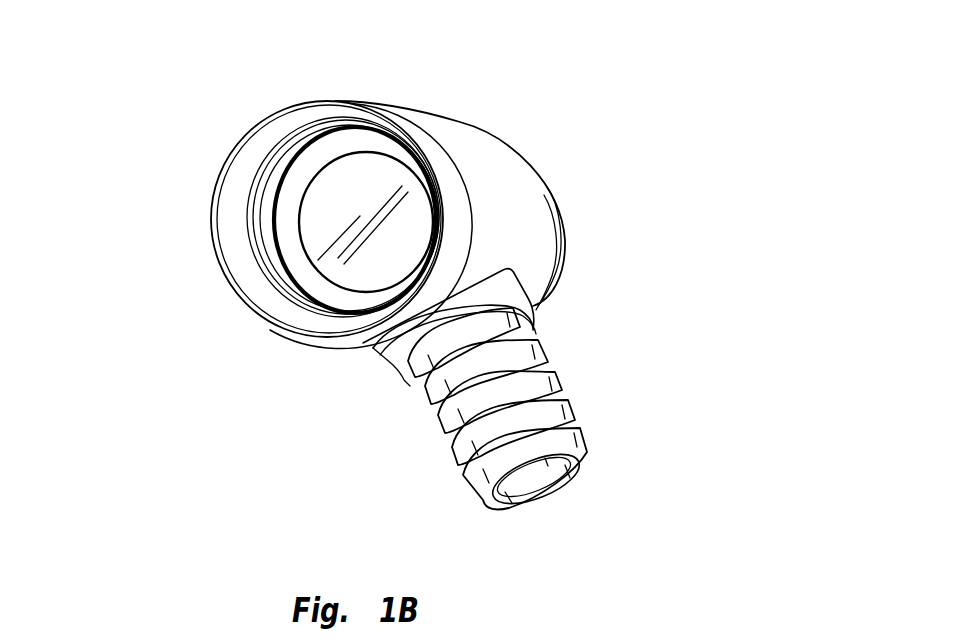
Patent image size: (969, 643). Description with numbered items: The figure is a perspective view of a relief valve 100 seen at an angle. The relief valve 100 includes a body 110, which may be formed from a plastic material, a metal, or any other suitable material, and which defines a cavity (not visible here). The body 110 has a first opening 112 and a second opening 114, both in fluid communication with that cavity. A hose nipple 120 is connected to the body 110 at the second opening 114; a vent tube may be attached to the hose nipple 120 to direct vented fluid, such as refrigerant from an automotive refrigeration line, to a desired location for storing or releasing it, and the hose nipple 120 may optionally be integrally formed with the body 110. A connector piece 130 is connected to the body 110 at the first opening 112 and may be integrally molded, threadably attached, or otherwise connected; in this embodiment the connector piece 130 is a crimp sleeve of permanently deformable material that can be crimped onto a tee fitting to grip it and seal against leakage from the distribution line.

The relief valve 100 is at (616, 156).
The body 110 is at (477, 133).
The first opening 112 is at (327, 151).
The second opening 114 is at (405, 378).
The hose nipple 120 is at (566, 370).
The connector piece 130 is at (235, 239).